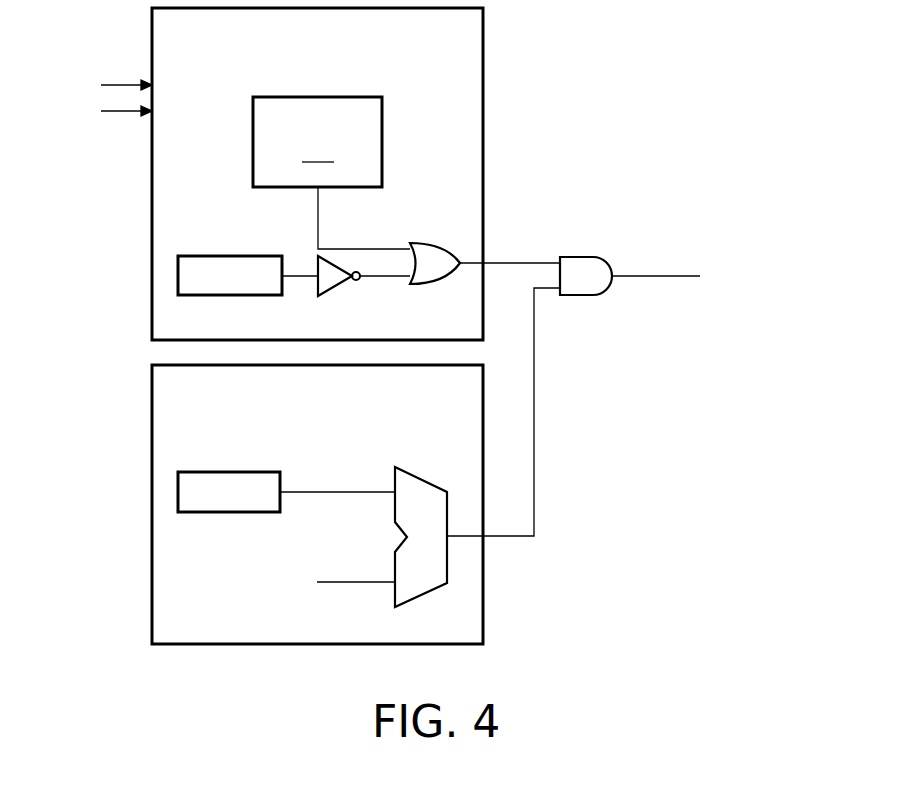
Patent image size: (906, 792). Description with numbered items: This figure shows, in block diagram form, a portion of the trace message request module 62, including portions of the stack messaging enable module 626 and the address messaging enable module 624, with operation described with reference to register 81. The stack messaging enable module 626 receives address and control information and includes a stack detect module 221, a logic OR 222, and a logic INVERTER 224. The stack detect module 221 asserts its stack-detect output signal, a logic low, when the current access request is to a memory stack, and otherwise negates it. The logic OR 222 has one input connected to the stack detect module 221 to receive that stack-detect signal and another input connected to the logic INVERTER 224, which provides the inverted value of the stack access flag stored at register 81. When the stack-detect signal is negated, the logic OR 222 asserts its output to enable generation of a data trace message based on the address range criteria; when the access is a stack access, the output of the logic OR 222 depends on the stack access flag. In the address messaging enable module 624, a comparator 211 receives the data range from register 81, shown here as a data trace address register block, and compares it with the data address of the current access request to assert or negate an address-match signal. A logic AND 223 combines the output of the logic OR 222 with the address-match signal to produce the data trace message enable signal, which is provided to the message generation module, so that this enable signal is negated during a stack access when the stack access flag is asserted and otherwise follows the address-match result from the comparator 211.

The trace message request module 62 is at (622, 669).
The stack messaging enable module 626 is at (484, 71).
The address messaging enable module 624 is at (152, 407).
The stack detect module 221 is at (383, 114).
The register 81 is at (228, 256).
The logic INVERTER 224 is at (339, 289).
The logic OR 222 is at (427, 243).
The logic AND 223 is at (578, 257).
The comparator 211 is at (420, 478).